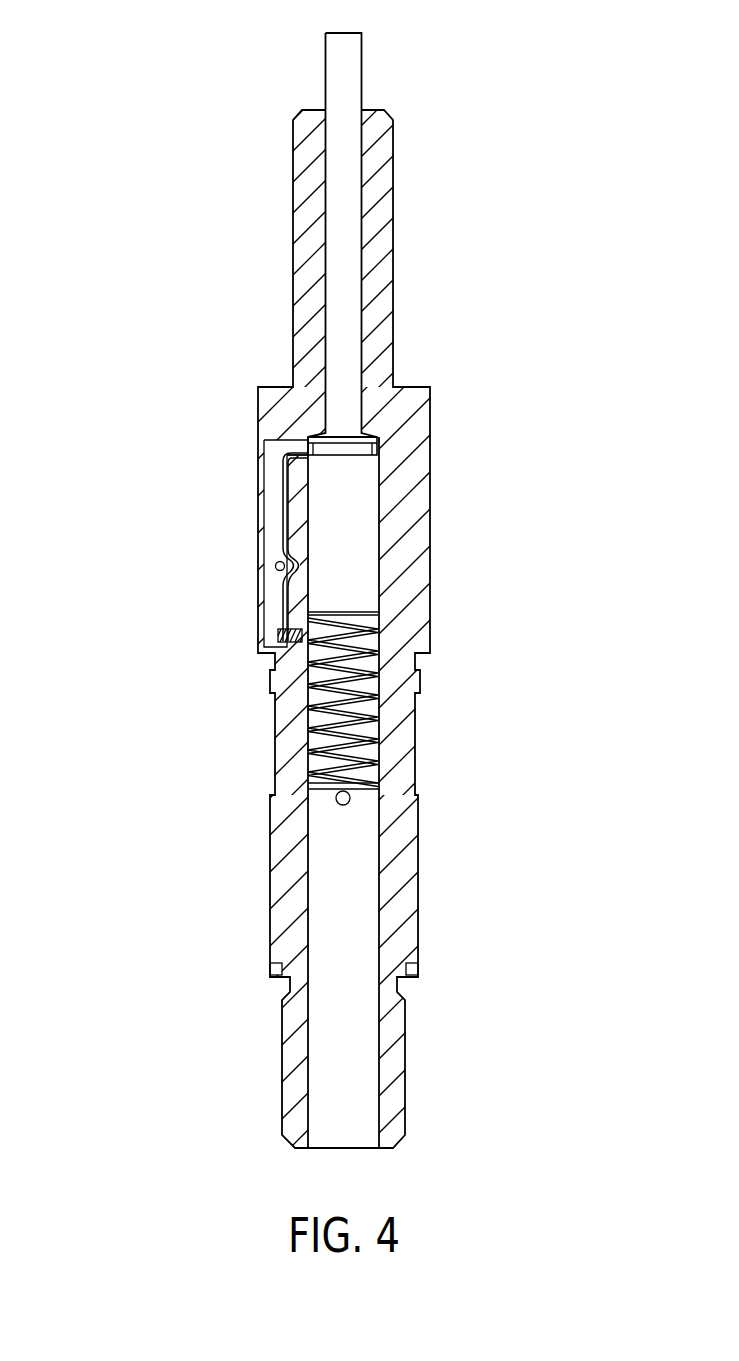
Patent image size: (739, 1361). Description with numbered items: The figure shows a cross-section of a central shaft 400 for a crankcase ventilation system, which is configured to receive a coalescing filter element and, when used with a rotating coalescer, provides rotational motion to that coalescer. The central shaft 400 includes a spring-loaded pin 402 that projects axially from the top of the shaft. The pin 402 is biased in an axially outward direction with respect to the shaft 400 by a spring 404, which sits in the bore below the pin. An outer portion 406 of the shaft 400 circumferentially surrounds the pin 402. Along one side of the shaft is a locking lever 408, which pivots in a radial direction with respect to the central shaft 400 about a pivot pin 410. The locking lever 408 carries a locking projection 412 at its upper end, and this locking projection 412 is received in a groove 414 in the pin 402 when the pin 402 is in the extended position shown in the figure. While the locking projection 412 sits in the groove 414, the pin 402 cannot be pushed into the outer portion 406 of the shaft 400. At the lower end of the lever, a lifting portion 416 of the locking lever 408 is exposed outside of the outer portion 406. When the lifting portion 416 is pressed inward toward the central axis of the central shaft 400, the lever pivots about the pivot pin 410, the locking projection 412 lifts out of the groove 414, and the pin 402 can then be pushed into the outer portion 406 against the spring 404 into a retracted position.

The central shaft 400 is at (168, 158).
The spring-loaded pin 402 is at (350, 60).
The spring 404 is at (373, 686).
The outer portion 406 is at (383, 147).
The locking lever 408 is at (216, 531).
The pivot pin 410 is at (276, 566).
The locking projection 412 is at (298, 444).
The groove 414 is at (377, 450).
The lifting portion 416 is at (268, 636).